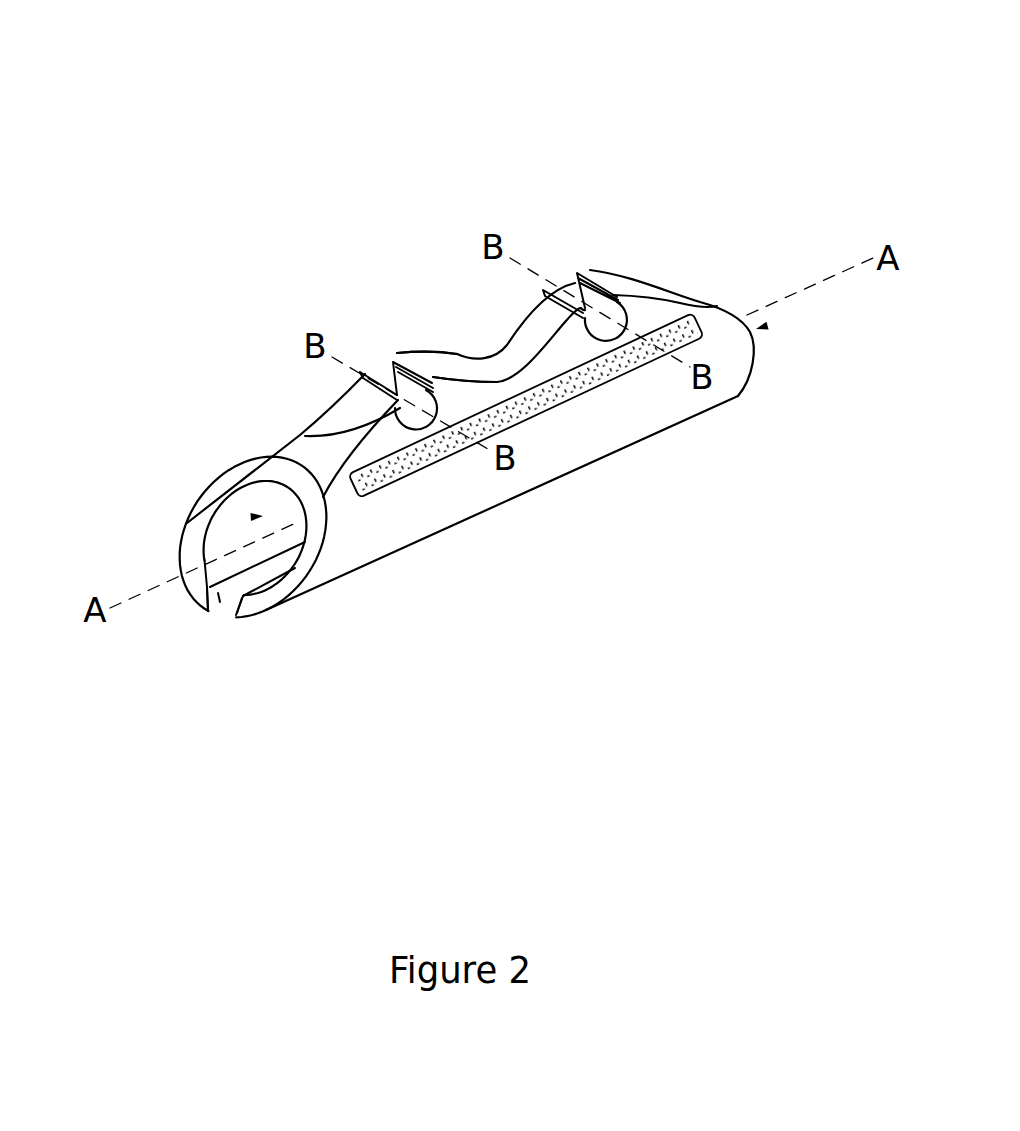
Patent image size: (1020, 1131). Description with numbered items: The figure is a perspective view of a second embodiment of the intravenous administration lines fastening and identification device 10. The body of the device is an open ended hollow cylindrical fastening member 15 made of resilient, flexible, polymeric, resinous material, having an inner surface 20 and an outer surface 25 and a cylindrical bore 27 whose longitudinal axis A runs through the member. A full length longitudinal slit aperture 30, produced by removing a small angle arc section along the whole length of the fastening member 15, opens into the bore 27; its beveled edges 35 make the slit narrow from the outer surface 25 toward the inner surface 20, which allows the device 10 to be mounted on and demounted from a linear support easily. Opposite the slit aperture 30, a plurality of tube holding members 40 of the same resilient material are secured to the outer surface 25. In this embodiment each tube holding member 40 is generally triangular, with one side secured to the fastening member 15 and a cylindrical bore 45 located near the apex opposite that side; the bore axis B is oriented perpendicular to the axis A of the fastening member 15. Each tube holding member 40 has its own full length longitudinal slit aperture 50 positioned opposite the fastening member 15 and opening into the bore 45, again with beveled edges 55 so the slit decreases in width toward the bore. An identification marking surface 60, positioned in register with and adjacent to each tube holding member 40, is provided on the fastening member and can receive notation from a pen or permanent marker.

The fastening and identification device 10 is at (759, 173).
The hollow cylindrical fastening member 15 is at (758, 356).
The inner surface 20 is at (182, 533).
The outer surface 25 is at (503, 477).
The cylindrical bore 27 is at (252, 518).
The longitudinal slit aperture 30 is at (217, 642).
The beveled edges 35 is at (216, 618).
The tube holding member 40 is at (323, 430).
The cylindrical bore 45 is at (580, 330).
The longitudinal slit aperture 50 is at (386, 360).
The beveled edges 55 is at (310, 437).
The identification marking surface 60 is at (417, 463).